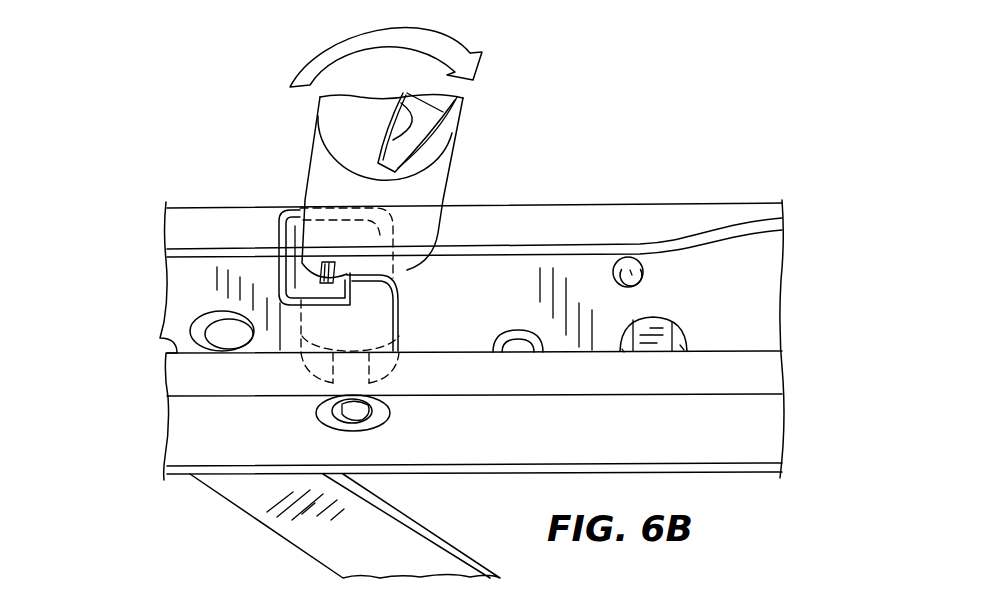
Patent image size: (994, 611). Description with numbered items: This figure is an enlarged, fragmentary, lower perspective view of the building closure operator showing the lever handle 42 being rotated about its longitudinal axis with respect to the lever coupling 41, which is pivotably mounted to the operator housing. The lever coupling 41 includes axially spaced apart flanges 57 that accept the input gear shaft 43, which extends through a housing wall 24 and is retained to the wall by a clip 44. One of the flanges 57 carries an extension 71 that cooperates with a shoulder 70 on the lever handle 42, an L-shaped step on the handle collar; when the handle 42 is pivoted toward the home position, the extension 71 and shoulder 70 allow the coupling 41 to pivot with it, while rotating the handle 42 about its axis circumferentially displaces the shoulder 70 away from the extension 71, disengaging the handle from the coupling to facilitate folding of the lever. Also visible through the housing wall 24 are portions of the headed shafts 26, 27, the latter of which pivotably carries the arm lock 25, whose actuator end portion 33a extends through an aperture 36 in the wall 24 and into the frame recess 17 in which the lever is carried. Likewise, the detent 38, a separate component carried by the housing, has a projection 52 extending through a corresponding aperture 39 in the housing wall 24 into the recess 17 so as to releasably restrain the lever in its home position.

The frame recess 17 is at (763, 303).
The housing wall 24 is at (190, 257).
The arm lock 25 is at (622, 349).
The headed shaft 26 is at (212, 332).
The headed shaft 27 is at (516, 330).
The portion of actuator end 33a is at (655, 331).
The aperture 36 is at (681, 343).
The detent 38 is at (652, 272).
The aperture 39 is at (623, 266).
The lever coupling 41 is at (407, 333).
The lever handle 42 is at (472, 137).
The input gear shaft 43 is at (341, 383).
The clip 44 is at (367, 428).
The projection 52 is at (632, 272).
The flange 57 is at (338, 330).
The shoulder 70 is at (331, 268).
The extension 71 is at (347, 288).